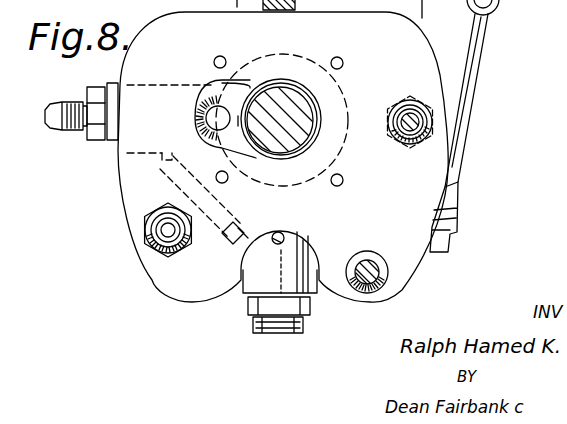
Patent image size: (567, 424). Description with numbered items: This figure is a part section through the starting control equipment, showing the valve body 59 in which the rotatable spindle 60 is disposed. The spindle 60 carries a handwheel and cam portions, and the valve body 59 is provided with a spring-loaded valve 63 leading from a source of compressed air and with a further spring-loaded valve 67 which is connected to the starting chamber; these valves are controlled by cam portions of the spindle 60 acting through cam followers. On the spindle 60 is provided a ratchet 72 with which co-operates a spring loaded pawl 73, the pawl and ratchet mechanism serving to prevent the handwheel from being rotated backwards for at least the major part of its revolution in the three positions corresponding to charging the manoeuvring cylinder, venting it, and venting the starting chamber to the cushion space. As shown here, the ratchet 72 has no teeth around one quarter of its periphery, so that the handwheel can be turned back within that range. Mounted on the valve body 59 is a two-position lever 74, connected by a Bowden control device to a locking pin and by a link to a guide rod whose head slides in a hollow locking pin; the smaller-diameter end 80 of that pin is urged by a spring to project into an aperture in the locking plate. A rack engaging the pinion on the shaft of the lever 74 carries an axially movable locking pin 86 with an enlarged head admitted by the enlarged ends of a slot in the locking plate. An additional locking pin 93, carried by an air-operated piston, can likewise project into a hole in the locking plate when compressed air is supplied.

The valve body 59 is at (293, 63).
The spindle 60 is at (306, 128).
The spring-loaded valve 63 is at (245, 320).
The spring-loaded valve 67 is at (102, 160).
The ratchet 72 is at (307, 97).
The spring loaded pawl 73 is at (230, 97).
The two-position lever 74 is at (470, 97).
The end of locking pin 80 is at (407, 151).
The locking pin 86 is at (363, 259).
The locking pin 93 is at (163, 230).